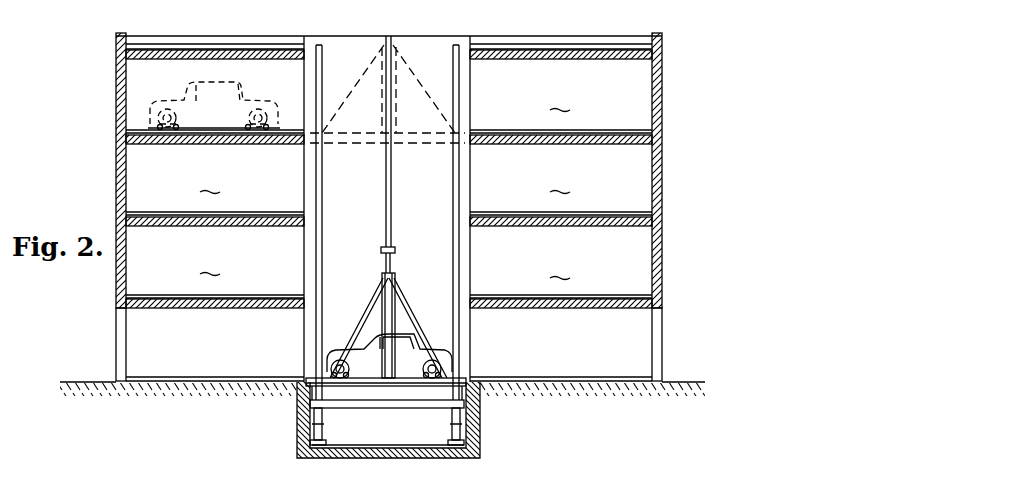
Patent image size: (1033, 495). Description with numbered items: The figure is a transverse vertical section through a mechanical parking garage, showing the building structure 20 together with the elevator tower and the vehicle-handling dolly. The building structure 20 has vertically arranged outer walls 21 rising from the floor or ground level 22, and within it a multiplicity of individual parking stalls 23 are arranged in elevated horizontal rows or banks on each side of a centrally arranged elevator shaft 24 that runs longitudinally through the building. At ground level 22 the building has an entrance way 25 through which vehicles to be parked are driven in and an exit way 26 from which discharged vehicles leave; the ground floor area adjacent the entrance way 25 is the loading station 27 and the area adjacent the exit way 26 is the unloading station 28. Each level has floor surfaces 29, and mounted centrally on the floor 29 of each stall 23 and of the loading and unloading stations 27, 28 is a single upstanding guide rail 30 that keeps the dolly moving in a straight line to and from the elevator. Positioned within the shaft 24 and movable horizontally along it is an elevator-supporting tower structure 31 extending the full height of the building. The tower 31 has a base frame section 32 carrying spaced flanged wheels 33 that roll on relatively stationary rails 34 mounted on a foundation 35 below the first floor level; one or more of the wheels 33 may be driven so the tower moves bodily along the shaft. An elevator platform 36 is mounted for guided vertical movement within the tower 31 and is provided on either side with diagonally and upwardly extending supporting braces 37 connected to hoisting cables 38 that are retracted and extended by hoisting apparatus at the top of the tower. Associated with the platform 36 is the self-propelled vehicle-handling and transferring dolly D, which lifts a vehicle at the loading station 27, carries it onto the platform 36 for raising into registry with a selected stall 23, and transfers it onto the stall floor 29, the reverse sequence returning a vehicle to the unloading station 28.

The parking garage building structure 20 is at (674, 186).
The outer walls 21 is at (117, 94).
The ground level 22 is at (84, 382).
The parking stalls 23 is at (384, 185).
The elevator shaft 24 is at (468, 326).
The entrance way 25 is at (665, 344).
The exit way 26 is at (111, 339).
The loading station 27 is at (520, 380).
The unloading station 28 is at (222, 378).
The floor surfaces 29 is at (153, 144).
The guide rail 30 is at (604, 133).
The elevator-supporting tower structure 31 is at (334, 200).
The base frame section 32 is at (392, 412).
The flanged wheels 33 is at (312, 420).
The rails 34 is at (312, 443).
The foundation 35 is at (430, 458).
The elevator platform 36 is at (468, 402).
The supporting braces 37 is at (408, 304).
The hoisting cables 38 is at (393, 194).
The vehicle-handling and transferring dolly D is at (226, 145).